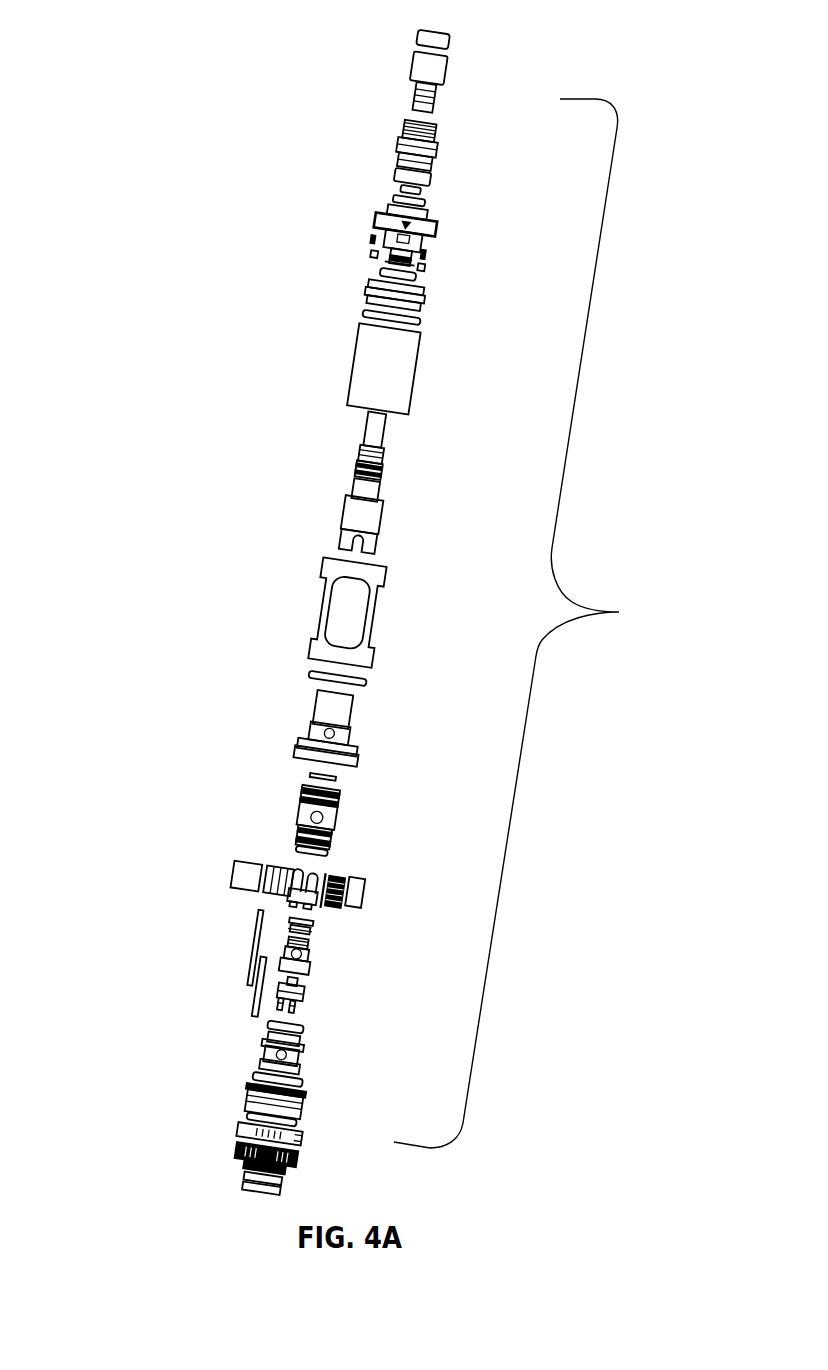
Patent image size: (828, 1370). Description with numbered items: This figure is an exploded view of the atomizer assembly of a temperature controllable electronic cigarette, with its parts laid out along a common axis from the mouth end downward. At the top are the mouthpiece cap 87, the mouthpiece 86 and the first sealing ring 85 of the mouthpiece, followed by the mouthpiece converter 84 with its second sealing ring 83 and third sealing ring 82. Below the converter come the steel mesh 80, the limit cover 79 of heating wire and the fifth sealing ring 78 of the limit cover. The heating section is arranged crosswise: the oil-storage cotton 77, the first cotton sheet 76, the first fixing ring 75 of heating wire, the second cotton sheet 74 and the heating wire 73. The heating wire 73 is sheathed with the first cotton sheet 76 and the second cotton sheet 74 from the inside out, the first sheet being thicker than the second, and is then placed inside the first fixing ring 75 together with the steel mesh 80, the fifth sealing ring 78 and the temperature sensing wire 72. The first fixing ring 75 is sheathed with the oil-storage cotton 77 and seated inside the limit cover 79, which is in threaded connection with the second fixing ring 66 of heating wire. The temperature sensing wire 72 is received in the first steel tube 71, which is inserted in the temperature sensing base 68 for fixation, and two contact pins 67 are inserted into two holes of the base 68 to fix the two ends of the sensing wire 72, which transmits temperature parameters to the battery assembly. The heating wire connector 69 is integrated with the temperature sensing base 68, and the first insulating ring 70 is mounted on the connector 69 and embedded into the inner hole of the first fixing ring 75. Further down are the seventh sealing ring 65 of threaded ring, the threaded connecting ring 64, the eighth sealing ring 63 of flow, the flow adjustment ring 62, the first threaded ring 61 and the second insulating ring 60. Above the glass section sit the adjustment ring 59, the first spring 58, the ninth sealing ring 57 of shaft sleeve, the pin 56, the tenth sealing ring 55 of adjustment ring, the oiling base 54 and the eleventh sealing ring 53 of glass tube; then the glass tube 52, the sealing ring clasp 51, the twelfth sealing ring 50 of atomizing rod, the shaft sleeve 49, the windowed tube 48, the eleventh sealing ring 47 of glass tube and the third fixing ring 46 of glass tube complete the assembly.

The third fixing ring of glass tube 46 is at (358, 758).
The eleventh sealing ring of glass tube 47 is at (365, 685).
The windowed tube 48 is at (373, 618).
The shaft sleeve 49 is at (382, 517).
The twelfth sealing ring of atomizing rod 50 is at (382, 475).
The sealing ring clasp 51 is at (382, 433).
The glass tube 52 is at (410, 377).
The eleventh sealing ring of glass tube 53 is at (418, 325).
The oiling base 54 is at (427, 300).
The tenth sealing ring of adjustment ring 55 is at (420, 283).
The pin 56 is at (380, 263).
The ninth sealing ring of shaft sleeve 57 is at (425, 262).
The first spring 58 is at (432, 253).
The adjustment ring 59 is at (438, 233).
The second insulating ring 60 is at (243, 1187).
The first threaded ring 61 is at (233, 1152).
The flow adjustment ring 62 is at (237, 1133).
The eighth sealing ring of flow 63 is at (245, 1120).
The threaded connecting ring 64 is at (243, 1106).
The seventh sealing ring of threaded ring 65 is at (250, 1079).
The second fixing ring of heating wire 66 is at (259, 1061).
The contact pins 67 is at (292, 1010).
The temperature sensing base 68 is at (309, 992).
The heating wire connector 69 is at (314, 965).
The first insulating ring of heating wire 70 is at (314, 929).
The first steel tube 71 is at (251, 1002).
The temperature sensing wire 72 is at (251, 936).
The heating wire 73 is at (342, 907).
The second cotton sheet 74 is at (366, 894).
The first fixing ring of heating wire 75 is at (297, 867).
The first cotton sheet 76 is at (270, 865).
The oil-storage cotton 77 is at (231, 870).
The fifth sealing ring of limit cover of heating wire 78 is at (328, 855).
The limit cover of heating wire 79 is at (298, 803).
The steel mesh 80 is at (300, 777).
The third sealing ring inside the converter 82 is at (427, 192).
The second sealing ring on the mouthpiece converter 83 is at (434, 177).
The mouthpiece converter 84 is at (442, 137).
The first sealing ring of mouthpiece 85 is at (405, 105).
The mouthpiece 86 is at (408, 66).
The mouthpiece cap 87 is at (413, 36).